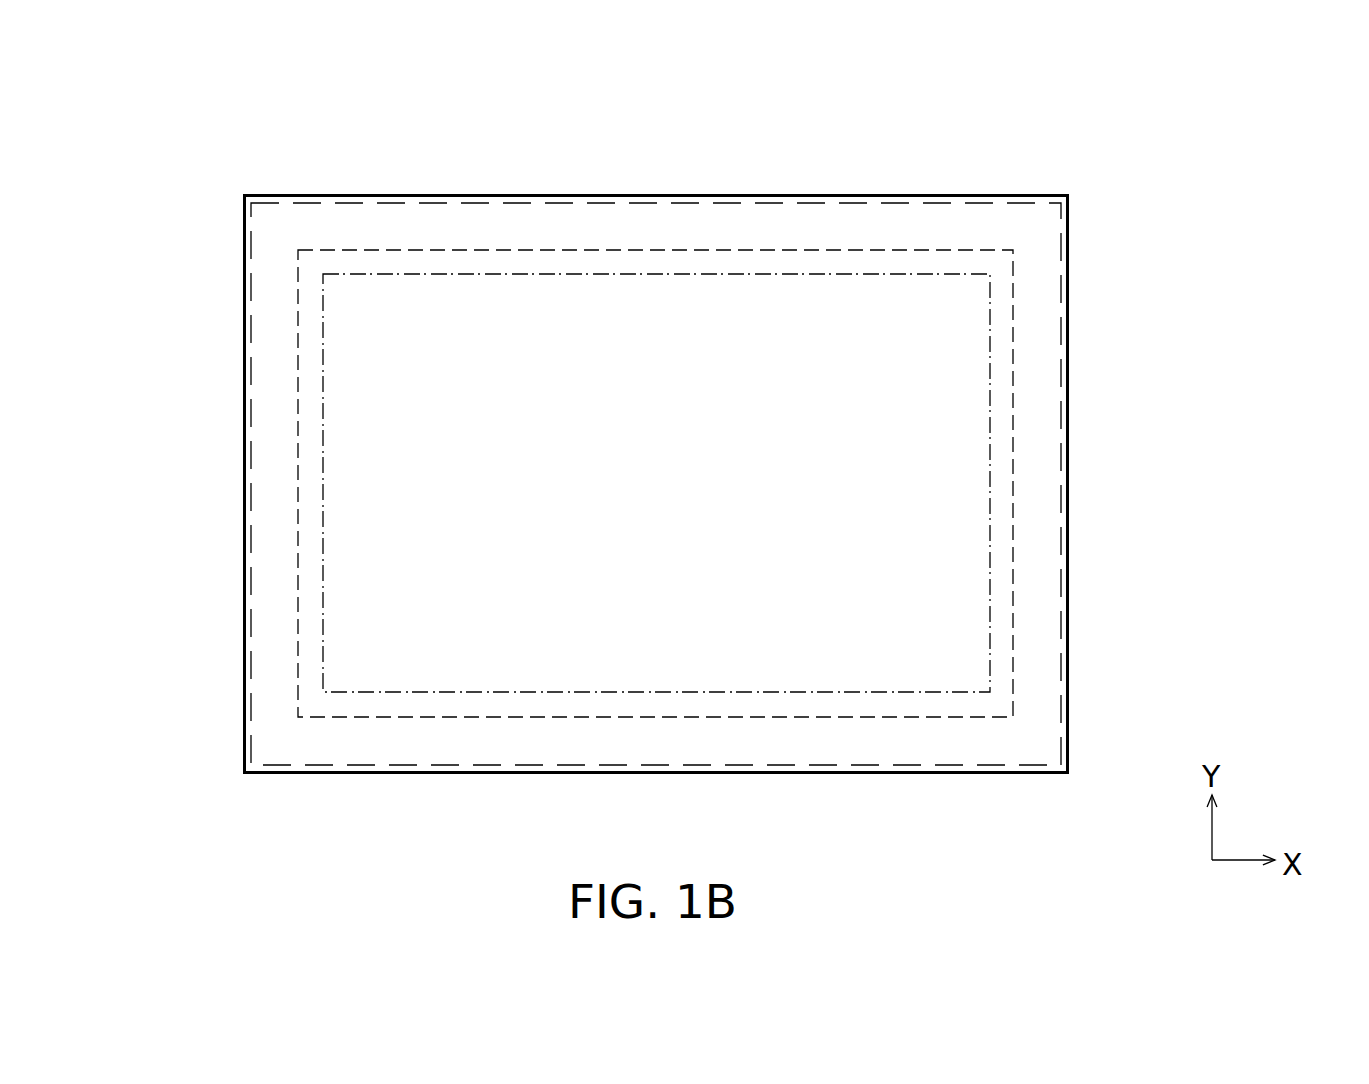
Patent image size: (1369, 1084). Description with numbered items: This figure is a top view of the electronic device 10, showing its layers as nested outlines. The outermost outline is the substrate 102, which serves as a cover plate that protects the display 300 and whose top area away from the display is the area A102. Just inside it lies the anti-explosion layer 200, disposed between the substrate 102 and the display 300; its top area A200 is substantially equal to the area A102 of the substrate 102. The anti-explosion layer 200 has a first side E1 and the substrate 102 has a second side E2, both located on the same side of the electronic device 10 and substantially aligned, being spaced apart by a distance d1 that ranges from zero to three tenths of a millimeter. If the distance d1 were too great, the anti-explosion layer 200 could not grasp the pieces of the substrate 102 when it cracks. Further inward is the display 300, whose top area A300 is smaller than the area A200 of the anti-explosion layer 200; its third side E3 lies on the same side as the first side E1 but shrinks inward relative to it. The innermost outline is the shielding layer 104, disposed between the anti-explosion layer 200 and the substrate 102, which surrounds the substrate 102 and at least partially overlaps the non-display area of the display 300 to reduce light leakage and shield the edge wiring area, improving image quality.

The electronic device 10 is at (132, 112).
The substrate 102 is at (246, 396).
The shielding layer 104 is at (323, 306).
The anti-explosion layer 200 is at (250, 481).
The display 300 is at (298, 604).
The area of the substrate A102 is at (735, 195).
The area of the anti-explosion layer A200 is at (836, 200).
The area of the display A300 is at (927, 250).
The distance d1 is at (1022, 349).
The first side E1 is at (1062, 527).
The second side E2 is at (1069, 404).
The third side E3 is at (1014, 628).